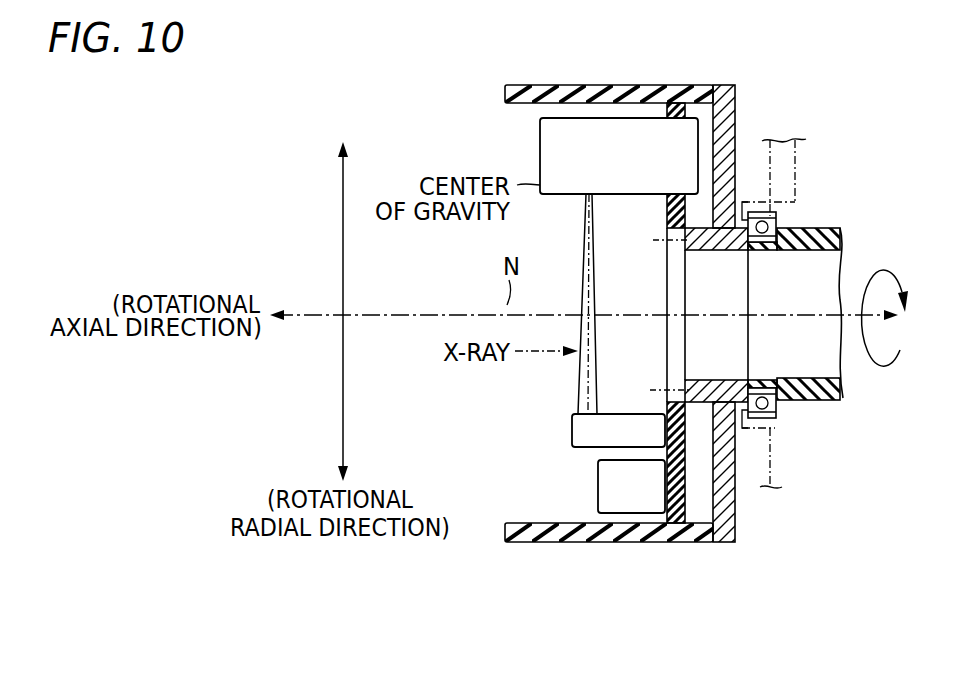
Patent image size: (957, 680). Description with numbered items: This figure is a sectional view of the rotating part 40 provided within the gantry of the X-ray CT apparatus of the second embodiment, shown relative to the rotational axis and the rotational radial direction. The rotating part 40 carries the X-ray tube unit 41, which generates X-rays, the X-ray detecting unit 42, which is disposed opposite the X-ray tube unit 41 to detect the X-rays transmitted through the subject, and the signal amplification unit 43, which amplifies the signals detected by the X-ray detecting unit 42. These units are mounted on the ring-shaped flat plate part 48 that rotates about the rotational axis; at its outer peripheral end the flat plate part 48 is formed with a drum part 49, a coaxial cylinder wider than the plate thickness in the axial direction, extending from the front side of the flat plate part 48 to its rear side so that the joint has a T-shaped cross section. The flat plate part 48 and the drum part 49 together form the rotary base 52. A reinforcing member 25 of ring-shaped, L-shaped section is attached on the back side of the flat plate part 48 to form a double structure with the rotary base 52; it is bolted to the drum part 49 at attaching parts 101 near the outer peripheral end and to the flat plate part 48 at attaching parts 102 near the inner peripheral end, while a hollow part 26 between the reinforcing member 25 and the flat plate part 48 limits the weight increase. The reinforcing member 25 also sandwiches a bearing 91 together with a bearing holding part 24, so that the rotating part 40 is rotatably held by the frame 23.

The rotating part 40 is at (426, 122).
The X-ray tube unit 41 is at (540, 142).
The X-ray detecting unit 42 is at (572, 430).
The signal amplification unit 43 is at (598, 490).
The flat plate part 48 is at (667, 200).
The drum part 49 is at (630, 85).
The rotary base 52 is at (686, 556).
The reinforcing member 25 is at (737, 108).
The hollow part 26 is at (703, 509).
The attaching parts 101 is at (737, 96).
The attaching parts 102 is at (664, 240).
The frame 23 is at (800, 153).
The bearing holding part 24 is at (777, 428).
The bearing 91 is at (776, 208).